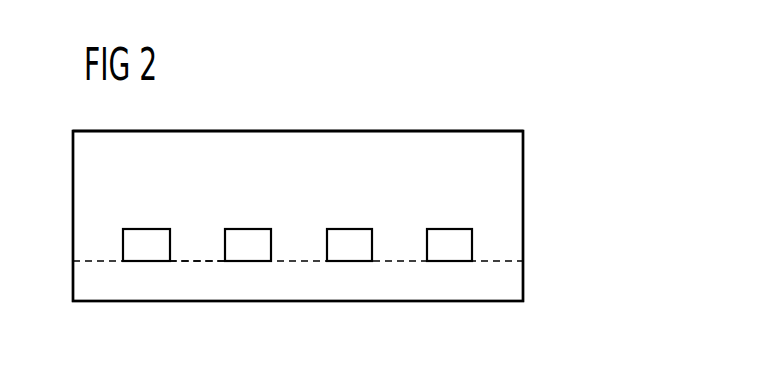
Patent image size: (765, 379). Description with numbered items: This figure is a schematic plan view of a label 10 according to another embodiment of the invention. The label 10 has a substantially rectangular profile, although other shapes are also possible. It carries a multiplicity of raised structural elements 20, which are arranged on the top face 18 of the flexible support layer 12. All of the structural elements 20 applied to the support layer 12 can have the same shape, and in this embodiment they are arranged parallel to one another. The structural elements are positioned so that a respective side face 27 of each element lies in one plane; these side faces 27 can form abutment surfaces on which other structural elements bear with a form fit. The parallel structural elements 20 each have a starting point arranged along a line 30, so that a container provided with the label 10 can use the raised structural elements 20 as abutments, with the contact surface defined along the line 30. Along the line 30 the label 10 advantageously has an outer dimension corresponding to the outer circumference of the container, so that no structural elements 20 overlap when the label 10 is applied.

The label 10 is at (563, 166).
The flexible support layer 12 is at (513, 207).
The top face 18 is at (487, 143).
The raised structural elements 20 is at (250, 236).
The side face 27 is at (262, 264).
The line 30 is at (400, 262).